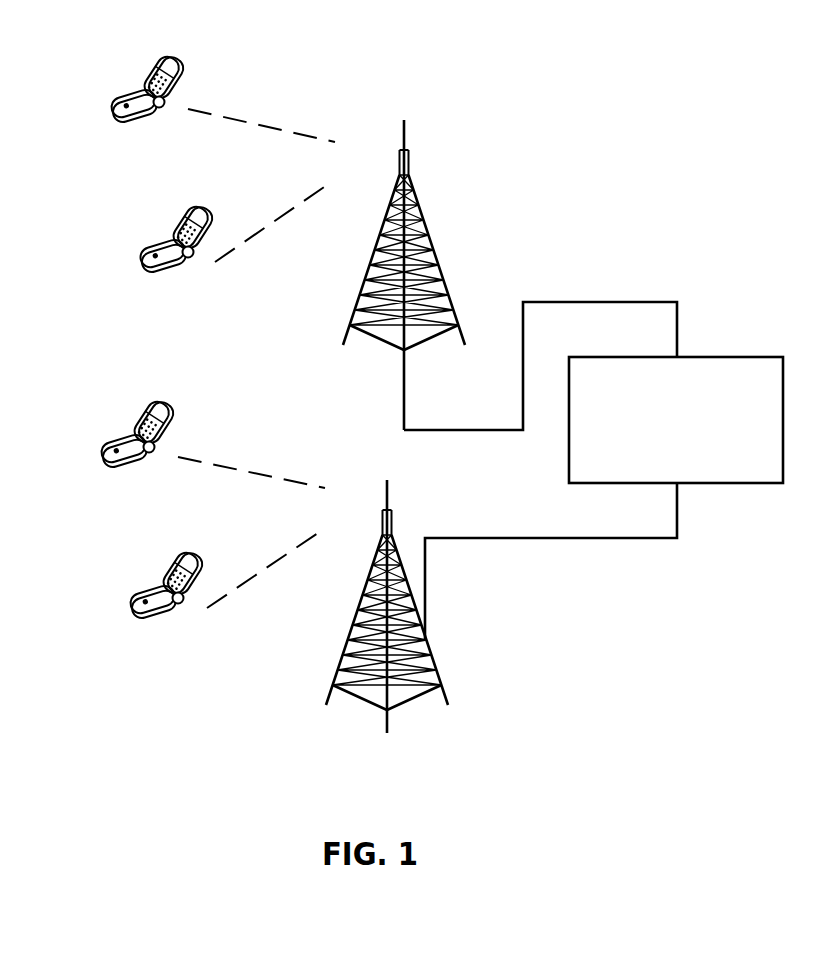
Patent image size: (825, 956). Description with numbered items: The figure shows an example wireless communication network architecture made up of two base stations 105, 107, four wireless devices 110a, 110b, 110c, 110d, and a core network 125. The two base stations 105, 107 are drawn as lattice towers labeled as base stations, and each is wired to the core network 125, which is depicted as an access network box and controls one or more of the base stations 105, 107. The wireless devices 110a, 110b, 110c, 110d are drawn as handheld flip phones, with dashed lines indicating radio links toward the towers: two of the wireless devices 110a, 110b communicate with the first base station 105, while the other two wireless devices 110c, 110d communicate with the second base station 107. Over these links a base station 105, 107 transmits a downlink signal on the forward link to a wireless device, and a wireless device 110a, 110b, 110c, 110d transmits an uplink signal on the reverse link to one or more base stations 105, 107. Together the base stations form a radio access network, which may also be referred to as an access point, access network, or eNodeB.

The base station 105 is at (418, 204).
The base station 107 is at (392, 522).
The wireless device 110a is at (130, 59).
The wireless device 110b is at (158, 209).
The wireless device 110c is at (120, 407).
The wireless device 110d is at (150, 557).
The core network 125 is at (592, 357).